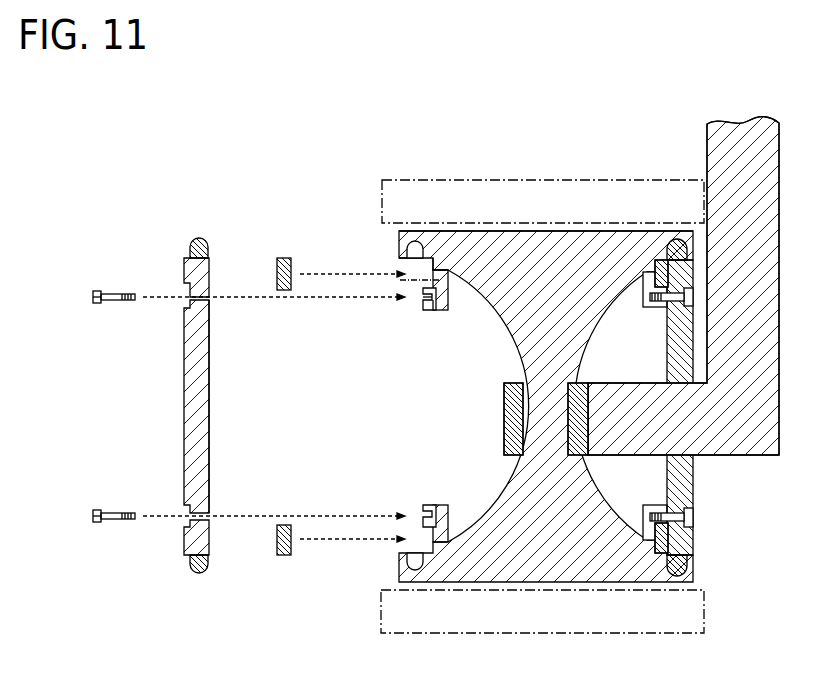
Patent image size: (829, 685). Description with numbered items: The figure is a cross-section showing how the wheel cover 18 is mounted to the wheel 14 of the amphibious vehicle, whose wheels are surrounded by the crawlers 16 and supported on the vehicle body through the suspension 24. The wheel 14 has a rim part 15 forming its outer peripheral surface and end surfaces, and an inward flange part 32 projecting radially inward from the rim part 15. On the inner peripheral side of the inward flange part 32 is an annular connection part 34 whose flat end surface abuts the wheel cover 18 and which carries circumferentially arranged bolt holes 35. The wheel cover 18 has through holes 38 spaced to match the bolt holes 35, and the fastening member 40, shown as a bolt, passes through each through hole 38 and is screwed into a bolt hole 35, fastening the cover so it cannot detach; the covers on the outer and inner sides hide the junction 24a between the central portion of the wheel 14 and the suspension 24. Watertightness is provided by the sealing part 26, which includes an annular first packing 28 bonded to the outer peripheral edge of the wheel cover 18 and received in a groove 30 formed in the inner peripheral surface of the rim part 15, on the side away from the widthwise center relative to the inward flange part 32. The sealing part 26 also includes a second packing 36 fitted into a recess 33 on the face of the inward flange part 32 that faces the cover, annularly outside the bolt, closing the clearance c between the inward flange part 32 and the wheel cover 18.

The wheel 14 is at (581, 231).
The rim part 15 is at (512, 231).
The crawler 16 is at (613, 180).
The wheel cover 18 is at (212, 423).
The suspension 24 is at (760, 456).
The junction 24a is at (593, 477).
The sealing part 26 is at (397, 263).
The first packing 28 is at (200, 238).
The groove 30 is at (428, 270).
The inward flange part 32 is at (452, 272).
The recess 33 is at (432, 281).
The connection part 34 is at (433, 303).
The bolt hole 35 is at (427, 298).
The second packing 36 is at (287, 258).
The through hole 38 is at (210, 296).
The fastening member 40 is at (127, 291).
The clearance c is at (443, 270).